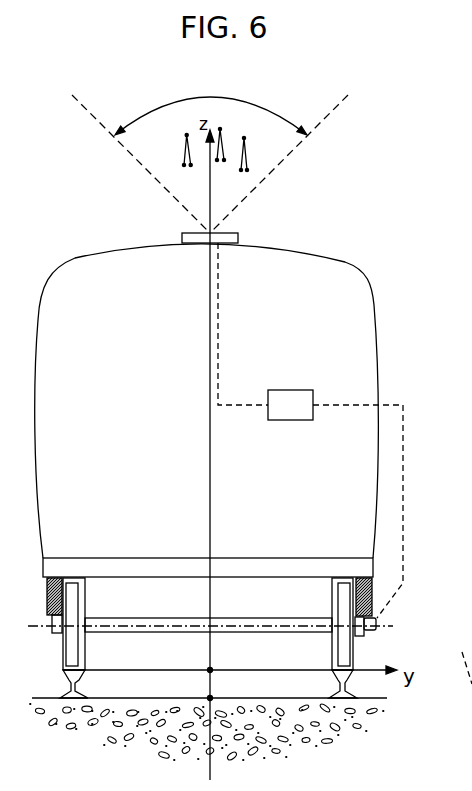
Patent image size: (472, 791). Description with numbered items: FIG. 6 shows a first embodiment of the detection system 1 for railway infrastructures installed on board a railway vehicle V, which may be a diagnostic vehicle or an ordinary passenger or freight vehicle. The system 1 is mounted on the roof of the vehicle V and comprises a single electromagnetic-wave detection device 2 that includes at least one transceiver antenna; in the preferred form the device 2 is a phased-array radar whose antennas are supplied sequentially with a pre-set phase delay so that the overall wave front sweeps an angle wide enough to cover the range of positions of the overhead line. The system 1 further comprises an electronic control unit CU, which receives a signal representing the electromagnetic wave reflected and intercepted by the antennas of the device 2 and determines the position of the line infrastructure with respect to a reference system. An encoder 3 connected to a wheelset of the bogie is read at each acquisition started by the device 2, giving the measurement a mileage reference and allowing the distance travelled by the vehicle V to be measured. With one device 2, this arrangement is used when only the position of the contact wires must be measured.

The detection system 1 is at (115, 202).
The electromagnetic-wave detection device 2 is at (231, 238).
The encoder 3 is at (364, 633).
The railway vehicle V is at (380, 269).
The electronic control unit CU is at (304, 417).